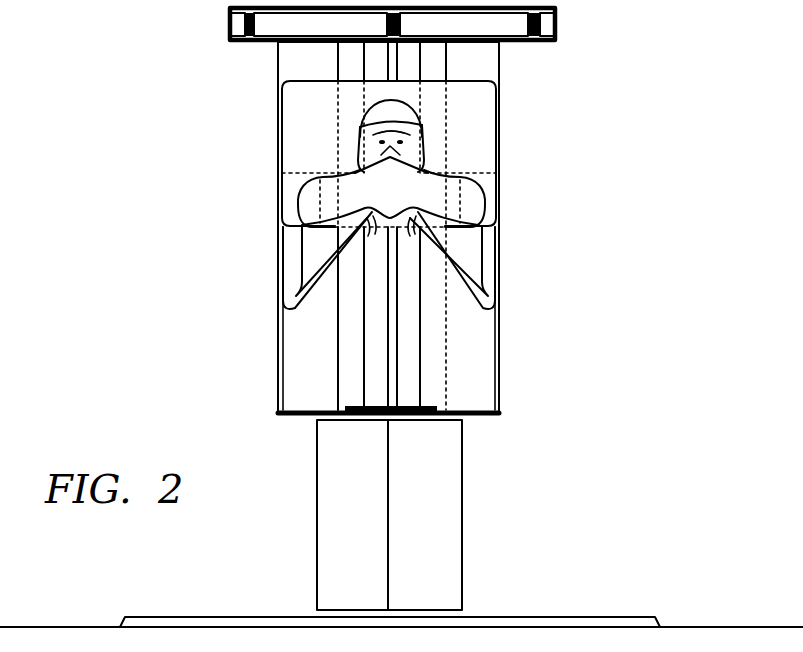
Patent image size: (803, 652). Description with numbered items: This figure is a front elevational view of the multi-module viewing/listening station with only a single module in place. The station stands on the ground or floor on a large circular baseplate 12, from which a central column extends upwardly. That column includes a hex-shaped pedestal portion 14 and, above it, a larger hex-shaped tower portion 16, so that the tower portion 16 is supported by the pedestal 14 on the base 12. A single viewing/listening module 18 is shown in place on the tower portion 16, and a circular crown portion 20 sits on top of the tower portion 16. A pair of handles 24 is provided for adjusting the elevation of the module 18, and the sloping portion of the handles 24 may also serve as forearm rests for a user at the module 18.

The baseplate 12 is at (215, 618).
The pedestal portion 14 is at (328, 533).
The tower portion 16 is at (292, 335).
The viewing/listening module 18 is at (485, 117).
The crown portion 20 is at (557, 20).
The handles 24 is at (287, 268).